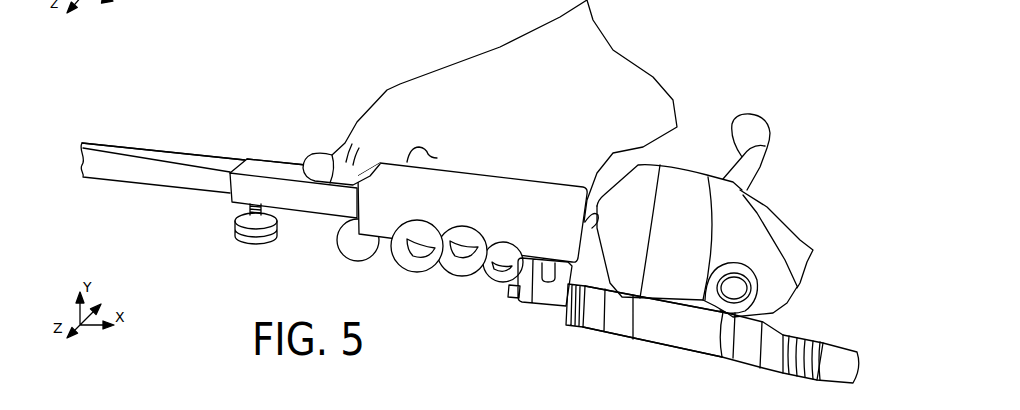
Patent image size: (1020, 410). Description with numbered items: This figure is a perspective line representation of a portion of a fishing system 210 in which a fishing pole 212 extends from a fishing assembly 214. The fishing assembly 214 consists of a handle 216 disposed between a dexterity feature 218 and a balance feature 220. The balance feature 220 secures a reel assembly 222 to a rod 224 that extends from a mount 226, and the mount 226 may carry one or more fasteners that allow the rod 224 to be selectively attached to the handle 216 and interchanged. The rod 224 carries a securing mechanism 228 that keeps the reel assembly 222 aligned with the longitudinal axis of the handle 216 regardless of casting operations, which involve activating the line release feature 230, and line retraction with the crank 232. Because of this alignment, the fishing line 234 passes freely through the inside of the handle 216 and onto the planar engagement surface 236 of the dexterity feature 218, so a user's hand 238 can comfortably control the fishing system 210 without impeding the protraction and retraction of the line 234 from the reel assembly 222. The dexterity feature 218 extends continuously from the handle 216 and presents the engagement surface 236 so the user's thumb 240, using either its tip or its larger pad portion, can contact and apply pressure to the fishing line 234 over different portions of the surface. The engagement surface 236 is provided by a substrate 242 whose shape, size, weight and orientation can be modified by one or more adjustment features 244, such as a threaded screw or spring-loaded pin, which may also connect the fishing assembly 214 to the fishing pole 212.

The fishing system 210 is at (184, 86).
The fishing pole 212 is at (125, 183).
The fishing assembly 214 is at (446, 322).
The handle 216 is at (550, 234).
The dexterity feature 218 is at (305, 208).
The balance feature 220 is at (588, 352).
The reel assembly 222 is at (693, 250).
The rod 224 is at (690, 336).
The mount 226 is at (508, 308).
The securing mechanism 228 is at (814, 320).
The line release feature 230 is at (803, 218).
The crank 232 is at (768, 163).
The fishing line 234 is at (155, 152).
The planar engagement surface 236 is at (271, 159).
The user's hand 238 is at (563, 118).
The user's thumb 240 is at (357, 121).
The substrate 242 is at (311, 215).
The adjustment feature 244 is at (234, 239).